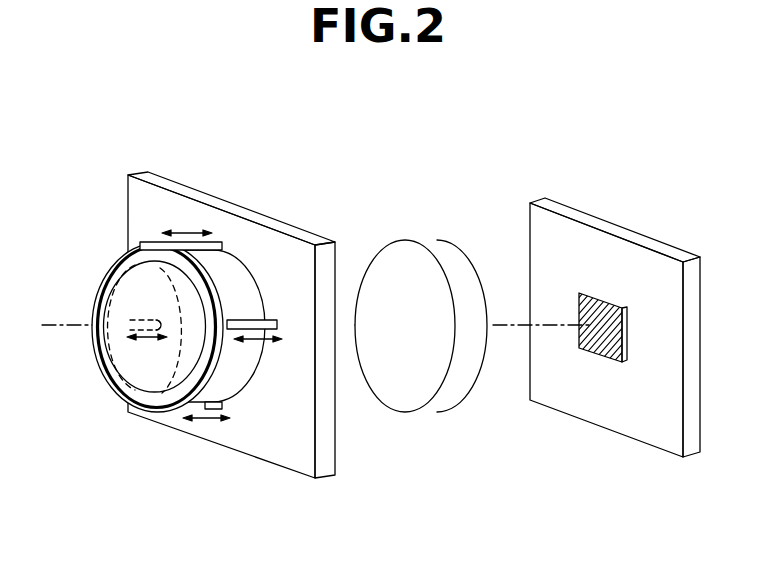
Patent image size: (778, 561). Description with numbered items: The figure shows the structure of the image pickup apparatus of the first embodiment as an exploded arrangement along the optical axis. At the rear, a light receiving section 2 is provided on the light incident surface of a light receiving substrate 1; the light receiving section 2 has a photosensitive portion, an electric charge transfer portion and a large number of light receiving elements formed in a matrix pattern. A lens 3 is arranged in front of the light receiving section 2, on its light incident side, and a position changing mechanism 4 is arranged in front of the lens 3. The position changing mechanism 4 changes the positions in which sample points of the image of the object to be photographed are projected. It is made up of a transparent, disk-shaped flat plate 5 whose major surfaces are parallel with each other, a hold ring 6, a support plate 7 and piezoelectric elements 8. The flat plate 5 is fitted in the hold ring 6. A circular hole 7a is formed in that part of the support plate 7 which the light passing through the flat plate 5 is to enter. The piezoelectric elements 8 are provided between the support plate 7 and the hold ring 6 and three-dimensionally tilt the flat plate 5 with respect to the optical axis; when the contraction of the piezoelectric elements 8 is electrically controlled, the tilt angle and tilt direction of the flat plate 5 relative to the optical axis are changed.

The light receiving substrate 1 is at (643, 242).
The light receiving section 2 is at (598, 354).
The lens 3 is at (441, 255).
The position changing mechanism 4 is at (231, 329).
The flat plate 5 is at (155, 362).
The hold ring 6 is at (95, 263).
The support plate 7 is at (273, 453).
The circular hole 7a is at (245, 378).
The piezoelectric elements 8 is at (243, 319).